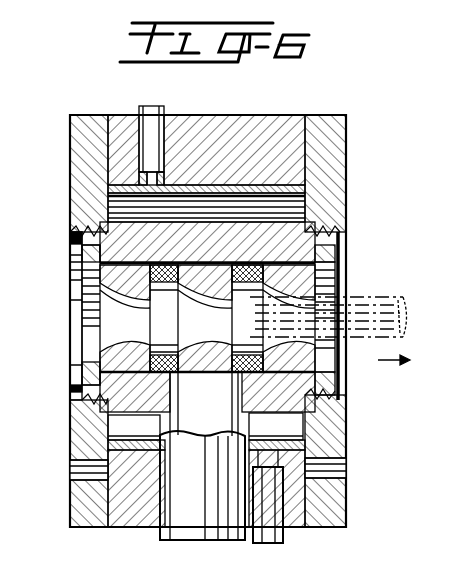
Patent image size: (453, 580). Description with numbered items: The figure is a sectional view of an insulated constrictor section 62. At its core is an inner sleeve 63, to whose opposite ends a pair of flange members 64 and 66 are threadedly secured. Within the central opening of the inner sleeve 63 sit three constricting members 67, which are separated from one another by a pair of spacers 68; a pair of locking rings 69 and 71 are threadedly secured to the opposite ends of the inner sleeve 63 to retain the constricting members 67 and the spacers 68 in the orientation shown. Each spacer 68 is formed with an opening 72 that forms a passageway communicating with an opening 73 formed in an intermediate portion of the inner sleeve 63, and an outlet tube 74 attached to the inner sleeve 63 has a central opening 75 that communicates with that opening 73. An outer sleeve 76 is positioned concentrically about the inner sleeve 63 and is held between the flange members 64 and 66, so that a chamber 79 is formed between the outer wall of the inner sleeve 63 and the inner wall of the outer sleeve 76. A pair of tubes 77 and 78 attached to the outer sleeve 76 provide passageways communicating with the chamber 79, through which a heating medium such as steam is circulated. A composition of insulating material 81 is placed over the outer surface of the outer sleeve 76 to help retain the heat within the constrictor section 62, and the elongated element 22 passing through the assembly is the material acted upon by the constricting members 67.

The cable rope 22 is at (357, 340).
The constrictor section 62 is at (352, 169).
The inner sleeve 63 is at (72, 240).
The flange member 64 is at (80, 148).
The flange member 66 is at (336, 142).
The constricting member 67 is at (105, 352).
The spacer 68 is at (170, 270).
The locking ring 69 is at (72, 262).
The locking ring 71 is at (340, 256).
The opening 72 is at (242, 345).
The opening 73 is at (163, 429).
The outlet tube 74 is at (160, 530).
The central opening 75 is at (243, 426).
The outer sleeve 76 is at (120, 185).
The tube 77 is at (165, 117).
The tube 78 is at (283, 530).
The chamber 79 is at (290, 212).
The insulating material 81 is at (122, 125).